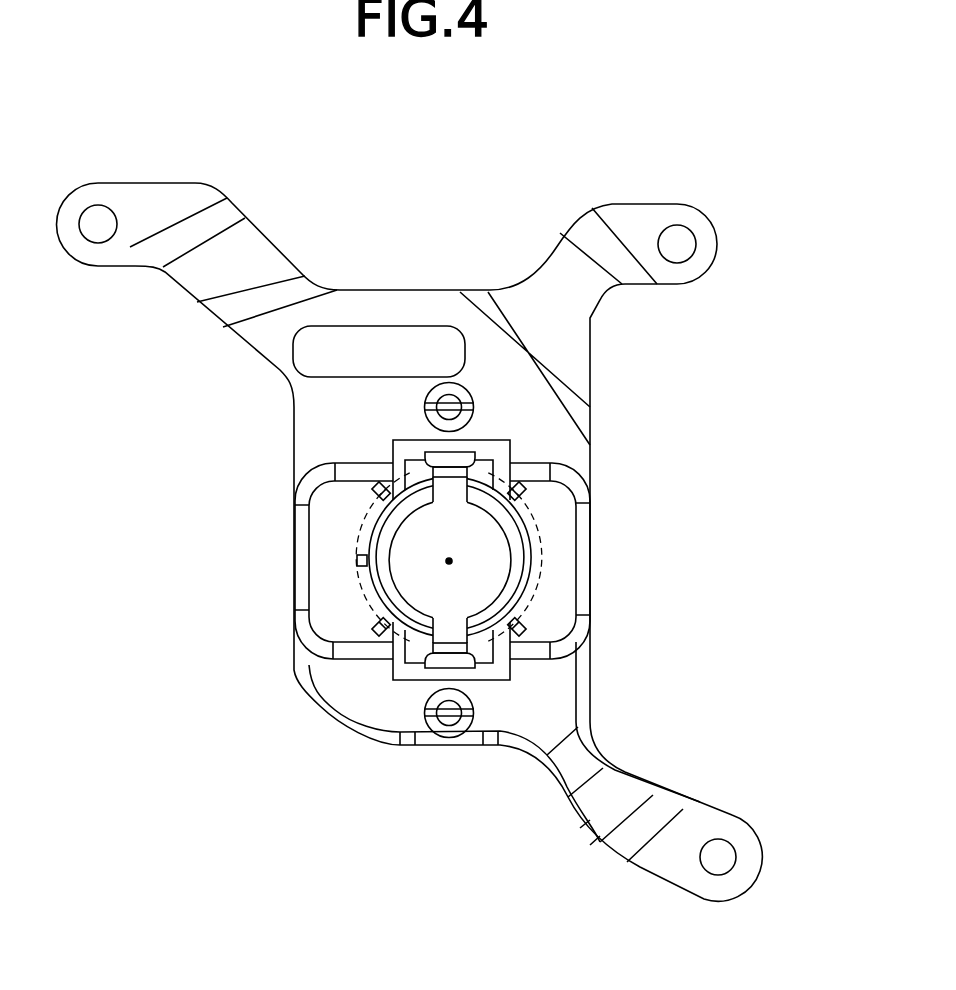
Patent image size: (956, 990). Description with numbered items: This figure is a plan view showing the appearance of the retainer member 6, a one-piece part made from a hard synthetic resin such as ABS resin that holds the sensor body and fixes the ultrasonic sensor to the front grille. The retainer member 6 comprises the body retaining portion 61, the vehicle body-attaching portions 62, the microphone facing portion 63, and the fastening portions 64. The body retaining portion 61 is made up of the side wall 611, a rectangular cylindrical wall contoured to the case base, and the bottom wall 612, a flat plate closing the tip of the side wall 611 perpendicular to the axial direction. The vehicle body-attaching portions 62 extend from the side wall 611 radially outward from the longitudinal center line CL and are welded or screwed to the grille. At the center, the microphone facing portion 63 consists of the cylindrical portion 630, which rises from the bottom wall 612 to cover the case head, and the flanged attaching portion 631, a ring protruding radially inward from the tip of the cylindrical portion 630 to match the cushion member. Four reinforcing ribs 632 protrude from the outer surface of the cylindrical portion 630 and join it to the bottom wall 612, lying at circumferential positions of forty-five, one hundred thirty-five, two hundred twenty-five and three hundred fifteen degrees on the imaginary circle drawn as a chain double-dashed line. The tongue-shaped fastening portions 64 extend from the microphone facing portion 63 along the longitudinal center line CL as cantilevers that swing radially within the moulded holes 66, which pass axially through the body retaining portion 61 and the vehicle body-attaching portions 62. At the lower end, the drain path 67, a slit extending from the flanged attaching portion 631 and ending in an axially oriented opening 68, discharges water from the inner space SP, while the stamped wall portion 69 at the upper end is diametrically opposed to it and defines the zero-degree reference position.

The retainer member 6 is at (738, 160).
The body retaining portion 61 is at (584, 657).
The side wall 611 is at (590, 607).
The bottom wall 612 is at (555, 516).
The vehicle body-attaching portions 62 is at (137, 193).
The microphone facing portion 63 is at (509, 479).
The cylindrical portion 630 is at (372, 517).
The flanged attaching portion 631 is at (382, 573).
The reinforcing ribs 632 is at (378, 490).
The fastening portions 64 is at (483, 462).
The moulded holes 66 is at (400, 445).
The drain path 67 is at (452, 652).
The opening 68 is at (437, 620).
The stamped wall portion 69 is at (447, 485).
The longitudinal center line CL is at (449, 561).
The inner space SP is at (365, 602).